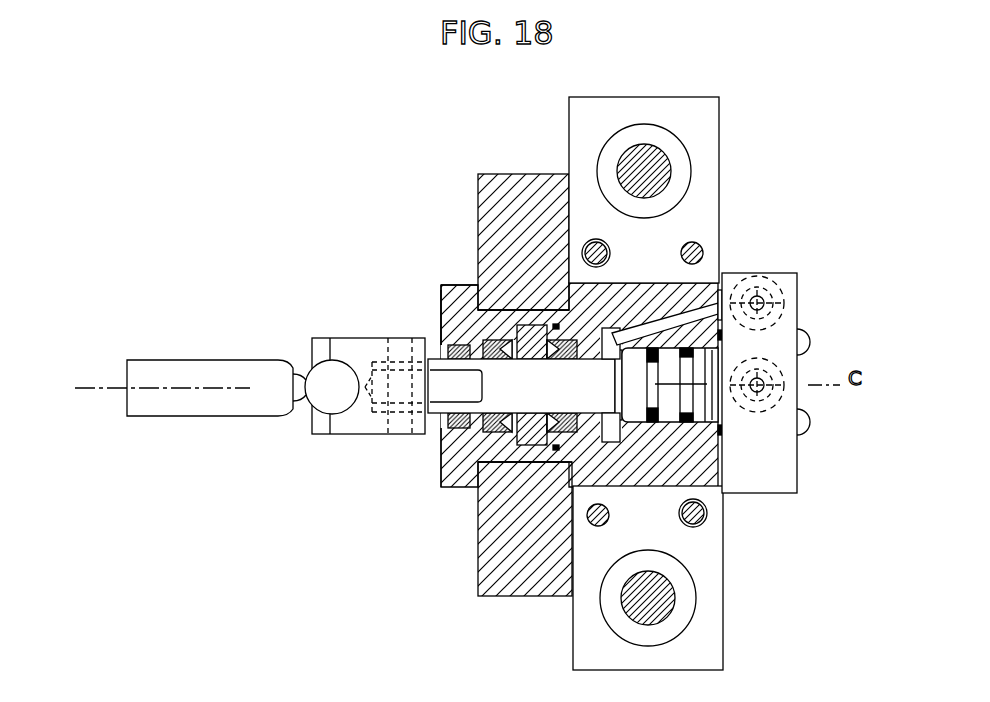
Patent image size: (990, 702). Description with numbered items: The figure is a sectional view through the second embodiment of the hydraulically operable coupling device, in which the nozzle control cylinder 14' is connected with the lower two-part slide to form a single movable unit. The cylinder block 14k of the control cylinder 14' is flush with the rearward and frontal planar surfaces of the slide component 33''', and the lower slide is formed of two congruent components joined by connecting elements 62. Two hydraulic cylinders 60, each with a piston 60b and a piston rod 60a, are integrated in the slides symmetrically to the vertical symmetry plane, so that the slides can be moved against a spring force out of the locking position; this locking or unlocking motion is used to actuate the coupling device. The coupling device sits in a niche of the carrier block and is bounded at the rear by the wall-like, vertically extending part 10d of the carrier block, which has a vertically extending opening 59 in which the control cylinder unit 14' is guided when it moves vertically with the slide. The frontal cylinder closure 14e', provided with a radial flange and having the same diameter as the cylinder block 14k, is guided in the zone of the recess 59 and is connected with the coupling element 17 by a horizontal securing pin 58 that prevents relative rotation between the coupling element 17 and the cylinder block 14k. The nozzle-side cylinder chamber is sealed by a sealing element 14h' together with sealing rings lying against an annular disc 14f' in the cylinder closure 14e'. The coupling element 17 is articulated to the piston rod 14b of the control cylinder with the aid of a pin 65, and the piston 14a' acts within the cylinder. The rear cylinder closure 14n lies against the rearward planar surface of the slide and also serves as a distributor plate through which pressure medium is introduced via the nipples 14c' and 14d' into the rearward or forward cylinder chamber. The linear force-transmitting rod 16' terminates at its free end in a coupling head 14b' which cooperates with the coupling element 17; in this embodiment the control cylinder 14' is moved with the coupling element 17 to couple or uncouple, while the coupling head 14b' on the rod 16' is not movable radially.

The lower slide component 33''' is at (695, 365).
The wall-like part of the carrier block 10d is at (510, 213).
The hydraulic cylinder 60 is at (709, 381).
The piston rod 60a is at (660, 173).
The piston 60b is at (680, 190).
The connecting elements 62 is at (604, 248).
The vertically extending opening 59 is at (483, 308).
The annular disc 14f' is at (421, 275).
The sealing element 14h' is at (400, 317).
The coupling element 17 is at (353, 347).
The coupling head 14b' is at (310, 355).
The force-transmitting rod 16' is at (178, 351).
The nipple 14c' is at (784, 314).
The nozzle control cylinder 14' is at (811, 396).
The nipple 14d' is at (809, 372).
The piston 14a' is at (758, 414).
The rear cylinder closure 14n is at (780, 480).
The cylinder block 14k is at (722, 493).
The pin 65 is at (390, 425).
The horizontal securing pin 58 is at (440, 400).
The frontal cylinder closure 14e' is at (559, 414).
The piston rod 14b is at (525, 515).